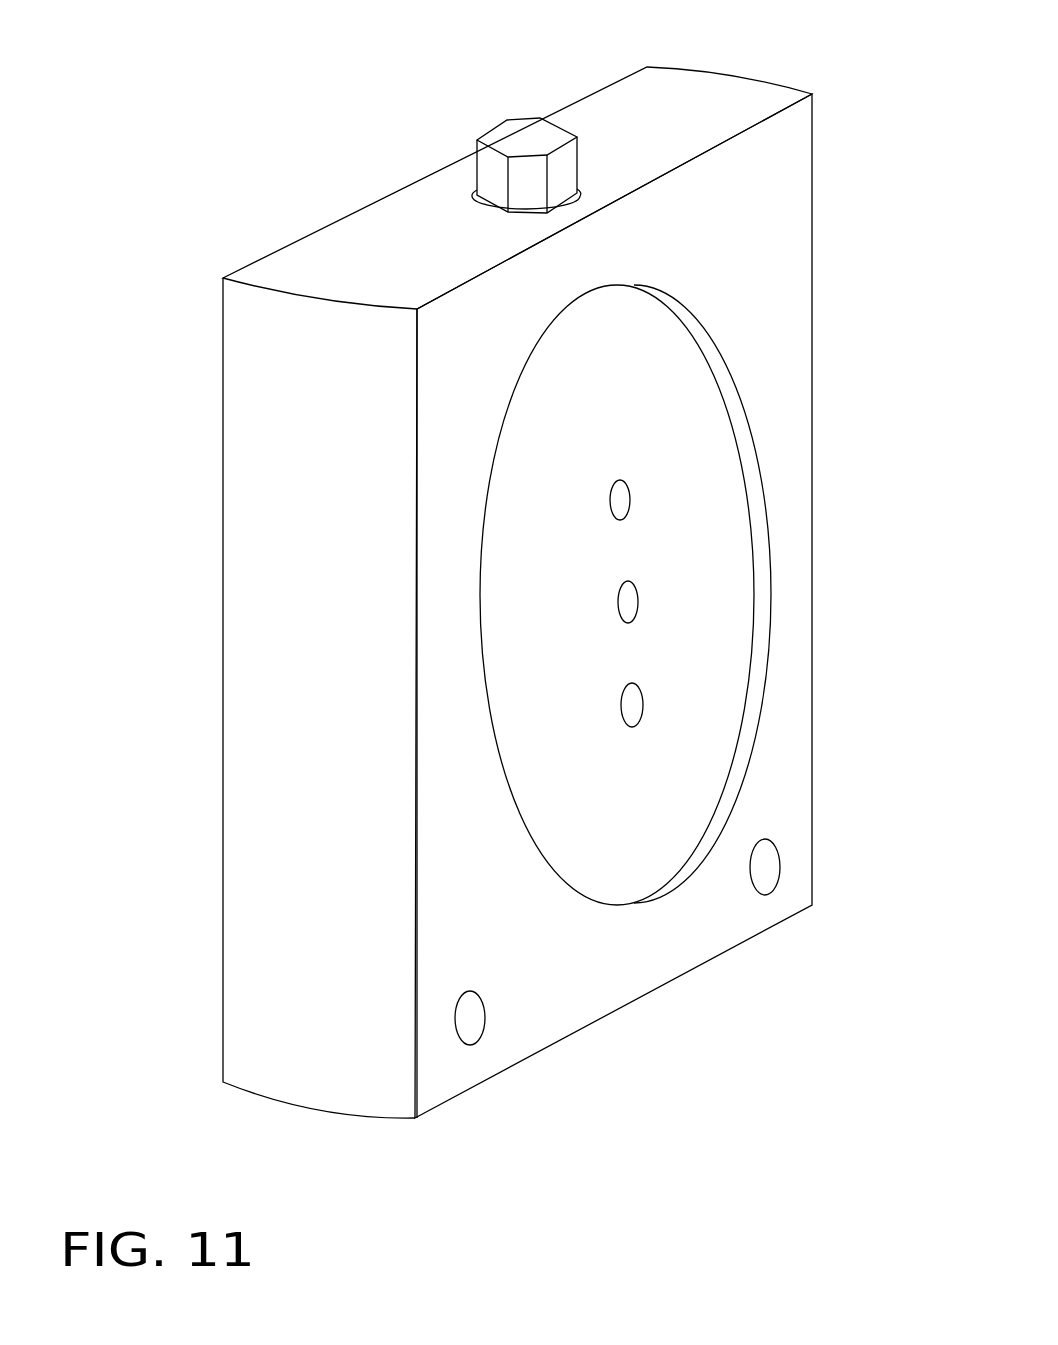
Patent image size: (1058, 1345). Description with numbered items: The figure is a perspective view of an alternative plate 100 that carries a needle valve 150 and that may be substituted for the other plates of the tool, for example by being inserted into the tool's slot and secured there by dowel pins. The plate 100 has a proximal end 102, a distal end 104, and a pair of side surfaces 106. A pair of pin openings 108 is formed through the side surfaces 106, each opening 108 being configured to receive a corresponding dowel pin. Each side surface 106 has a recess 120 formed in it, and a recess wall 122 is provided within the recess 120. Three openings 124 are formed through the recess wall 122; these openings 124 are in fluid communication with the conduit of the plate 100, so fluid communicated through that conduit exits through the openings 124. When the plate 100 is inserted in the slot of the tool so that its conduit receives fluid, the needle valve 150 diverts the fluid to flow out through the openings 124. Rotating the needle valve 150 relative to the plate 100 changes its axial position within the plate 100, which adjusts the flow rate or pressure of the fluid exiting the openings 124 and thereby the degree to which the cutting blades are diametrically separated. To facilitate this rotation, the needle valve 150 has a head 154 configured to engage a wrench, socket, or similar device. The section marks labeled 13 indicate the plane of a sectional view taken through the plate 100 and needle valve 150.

The plate 100 is at (466, 589).
The proximal end 102 is at (645, 995).
The distal end 104 is at (420, 276).
The side surfaces 106 is at (288, 243).
The pin openings 108 is at (476, 1018).
The recess 120 is at (681, 595).
The recess wall 122 is at (625, 401).
The openings 124 is at (625, 510).
The needle valve 150 is at (474, 130).
The head 154 is at (487, 175).
The section line 13- 13 is at (813, 28).